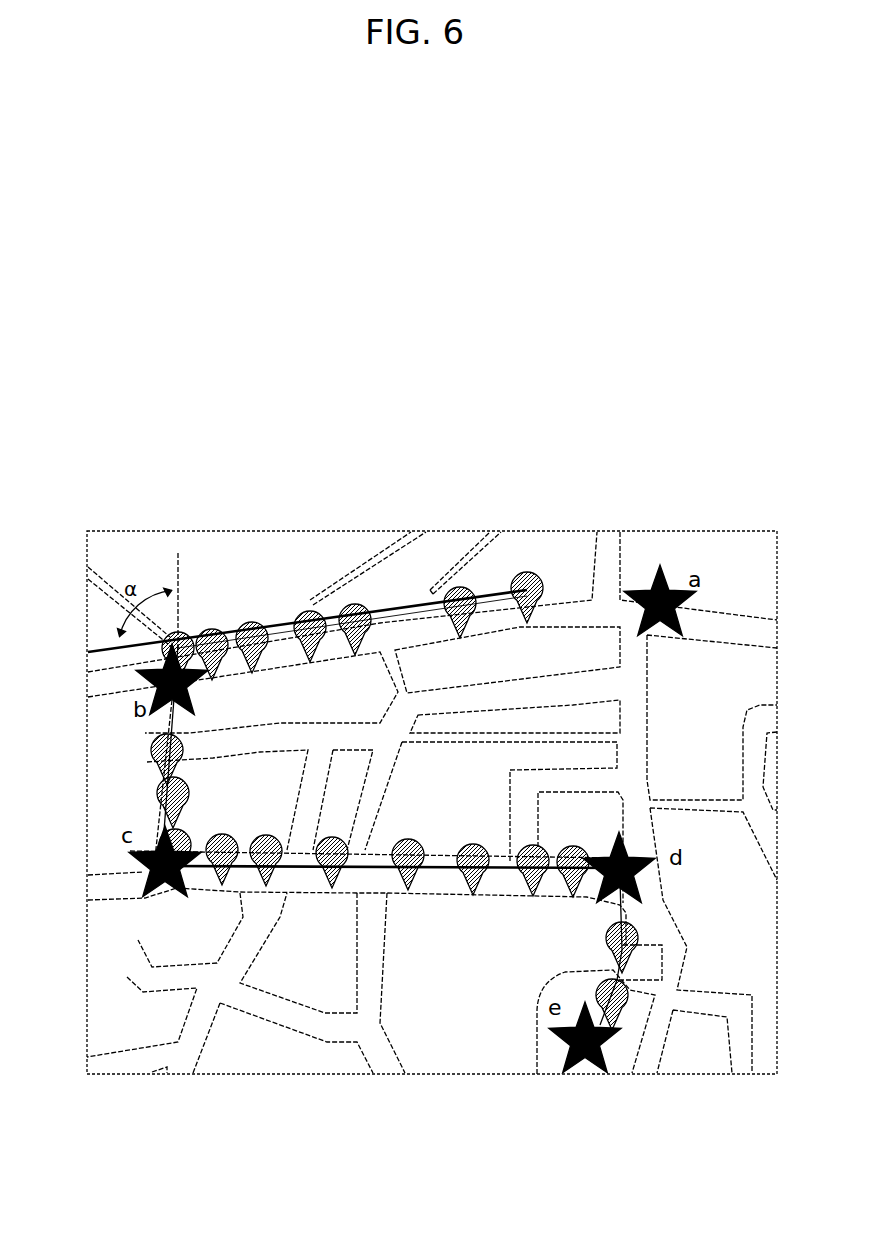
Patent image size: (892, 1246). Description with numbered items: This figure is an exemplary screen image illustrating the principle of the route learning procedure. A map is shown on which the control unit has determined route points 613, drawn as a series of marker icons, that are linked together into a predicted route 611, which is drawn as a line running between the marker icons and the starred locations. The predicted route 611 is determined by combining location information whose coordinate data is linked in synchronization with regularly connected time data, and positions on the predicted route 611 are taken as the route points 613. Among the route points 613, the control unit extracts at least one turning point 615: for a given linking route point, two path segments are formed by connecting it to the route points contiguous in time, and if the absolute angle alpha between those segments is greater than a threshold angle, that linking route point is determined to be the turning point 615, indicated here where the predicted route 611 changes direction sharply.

The route points 613 is at (468, 588).
The turning point 615 is at (140, 858).
The predicted route 611 is at (537, 1062).